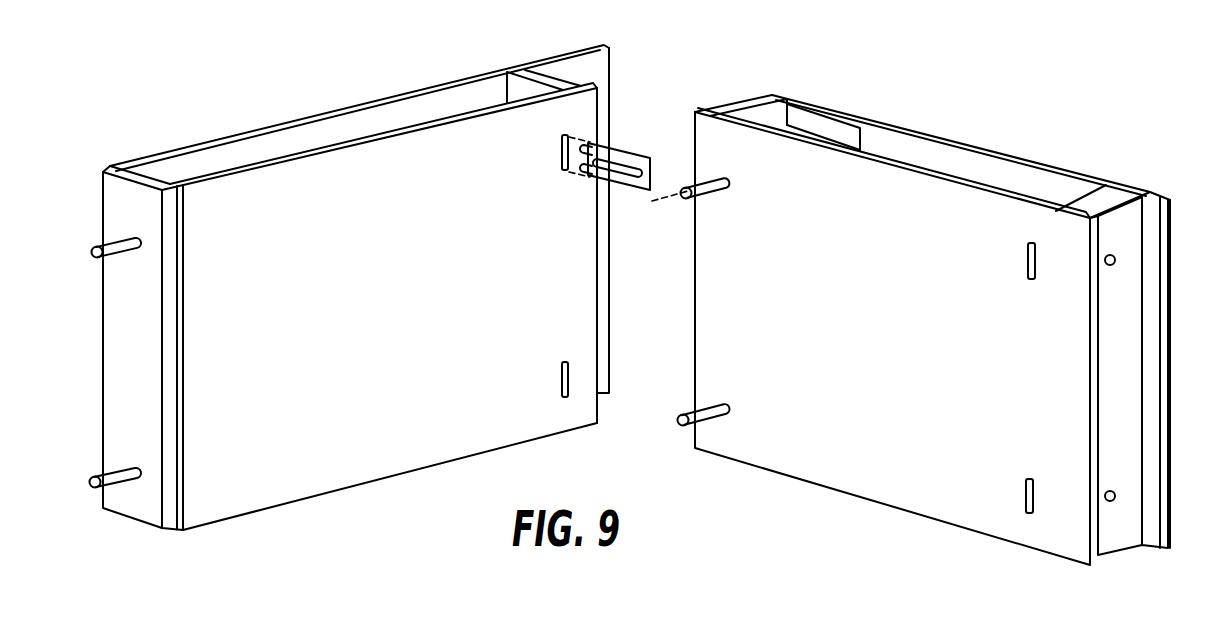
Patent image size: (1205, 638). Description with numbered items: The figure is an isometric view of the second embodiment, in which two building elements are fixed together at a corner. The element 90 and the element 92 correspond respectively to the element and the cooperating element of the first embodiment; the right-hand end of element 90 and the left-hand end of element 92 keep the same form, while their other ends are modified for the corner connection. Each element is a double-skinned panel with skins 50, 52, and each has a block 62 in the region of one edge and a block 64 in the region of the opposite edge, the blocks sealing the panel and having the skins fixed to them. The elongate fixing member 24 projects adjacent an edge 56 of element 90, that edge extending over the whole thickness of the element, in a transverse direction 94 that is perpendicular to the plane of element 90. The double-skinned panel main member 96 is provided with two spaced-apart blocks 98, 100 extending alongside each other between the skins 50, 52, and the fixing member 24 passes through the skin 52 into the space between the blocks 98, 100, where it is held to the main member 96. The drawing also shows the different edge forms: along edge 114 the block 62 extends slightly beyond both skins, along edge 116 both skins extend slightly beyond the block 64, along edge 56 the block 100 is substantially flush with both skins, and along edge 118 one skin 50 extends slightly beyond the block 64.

The fixing member 24 is at (722, 186).
The skin 50 is at (400, 95).
The skin 52 is at (383, 156).
The edge 56 is at (686, 134).
The block 62 is at (143, 177).
The block 64 is at (530, 78).
The element 90 is at (962, 134).
The element 92 is at (320, 106).
The transverse direction 94 is at (625, 209).
The main member 96 is at (880, 490).
The block 98 is at (836, 121).
The block 100 is at (742, 107).
The edge 114 is at (140, 512).
The edge 116 is at (1118, 545).
The edge 118 is at (632, 346).